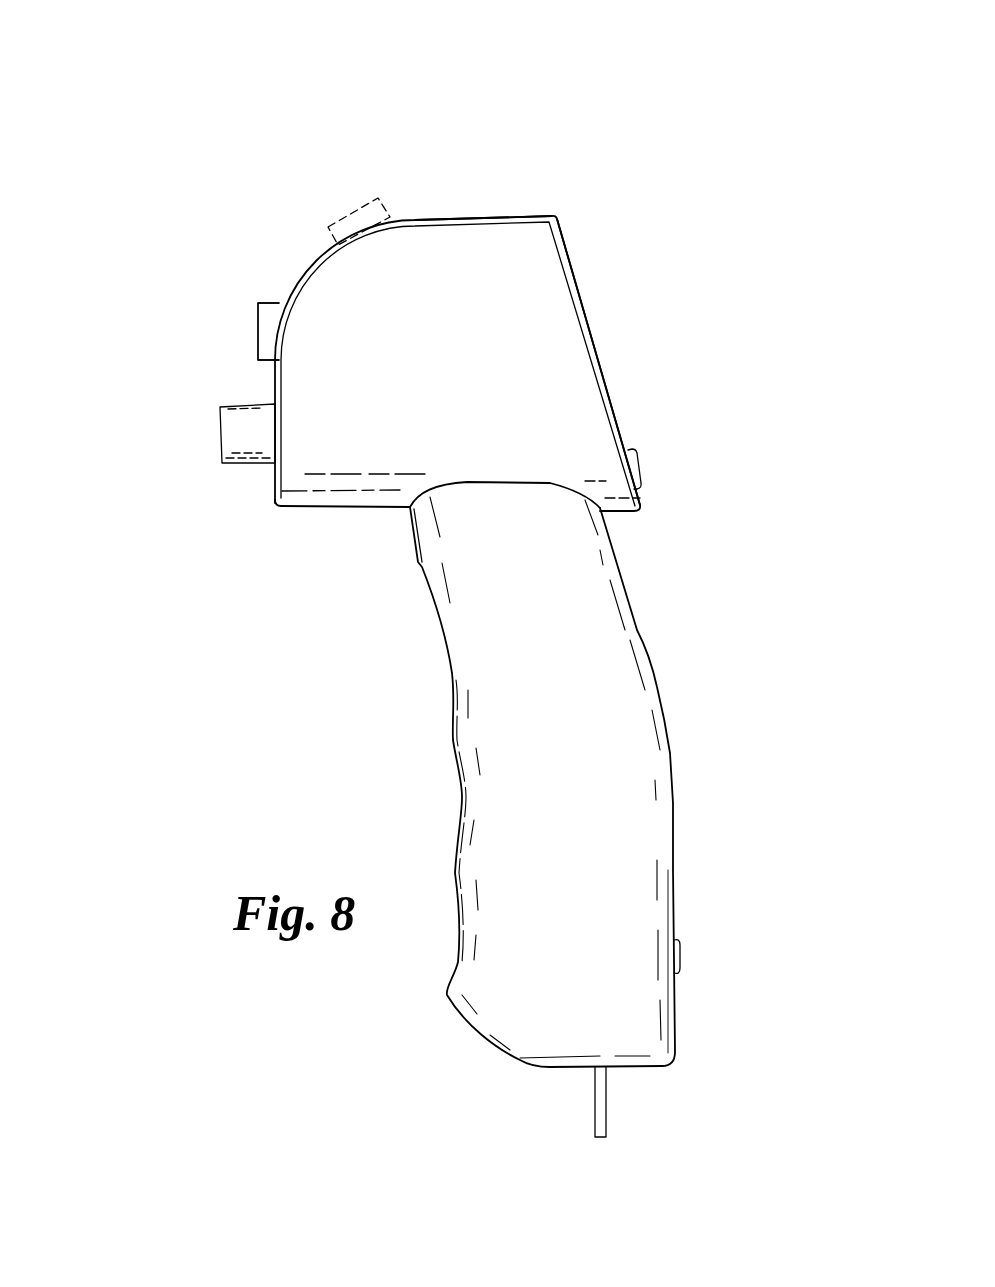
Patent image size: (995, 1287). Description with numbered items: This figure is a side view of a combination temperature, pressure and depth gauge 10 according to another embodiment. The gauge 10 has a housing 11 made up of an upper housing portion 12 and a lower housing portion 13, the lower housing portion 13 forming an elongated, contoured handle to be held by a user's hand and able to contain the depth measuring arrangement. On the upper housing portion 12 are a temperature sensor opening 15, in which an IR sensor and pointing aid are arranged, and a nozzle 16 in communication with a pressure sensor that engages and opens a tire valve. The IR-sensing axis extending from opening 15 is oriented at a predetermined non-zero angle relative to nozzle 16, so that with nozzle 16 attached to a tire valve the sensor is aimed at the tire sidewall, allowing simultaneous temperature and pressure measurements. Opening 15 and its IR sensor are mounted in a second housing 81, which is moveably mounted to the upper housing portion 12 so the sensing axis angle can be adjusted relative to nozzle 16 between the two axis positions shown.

The gauge 10 is at (605, 238).
The housing 11 is at (498, 217).
The upper housing portion 12 is at (568, 332).
The lower housing portion 13 is at (622, 802).
The temperature sensor opening 15 is at (246, 318).
The nozzle 16 is at (233, 448).
The second housing 81 is at (272, 305).